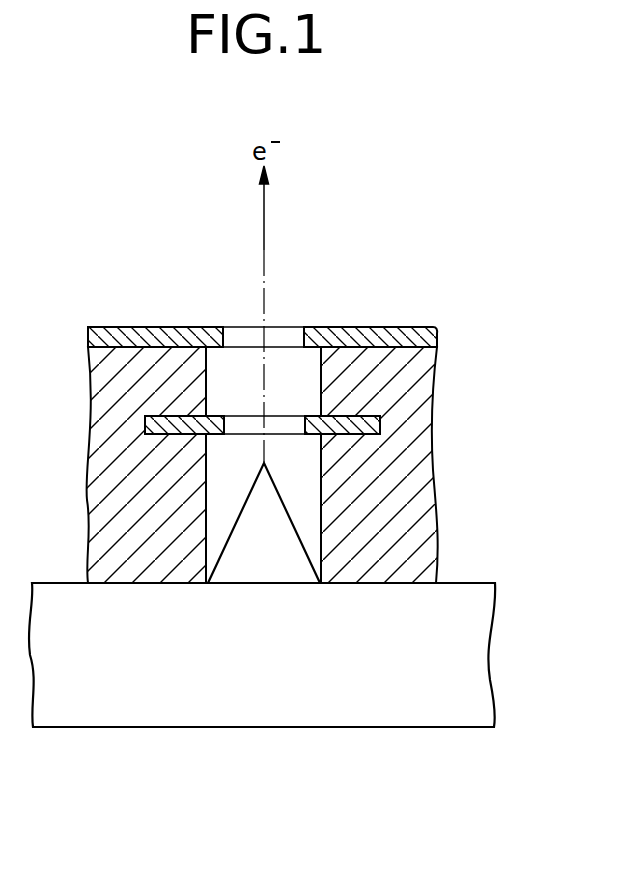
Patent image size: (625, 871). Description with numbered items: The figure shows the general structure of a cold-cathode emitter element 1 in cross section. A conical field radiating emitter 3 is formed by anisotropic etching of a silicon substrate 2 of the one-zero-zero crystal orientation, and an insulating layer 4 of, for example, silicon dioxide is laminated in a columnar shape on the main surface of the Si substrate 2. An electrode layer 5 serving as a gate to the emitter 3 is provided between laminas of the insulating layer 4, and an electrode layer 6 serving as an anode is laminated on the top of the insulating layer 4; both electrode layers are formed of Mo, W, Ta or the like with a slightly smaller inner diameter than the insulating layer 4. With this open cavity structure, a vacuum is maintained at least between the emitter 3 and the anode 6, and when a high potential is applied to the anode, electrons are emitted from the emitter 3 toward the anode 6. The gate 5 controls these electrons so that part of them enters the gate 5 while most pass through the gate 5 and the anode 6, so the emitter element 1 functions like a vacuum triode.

The cold-cathode emitter element 1 is at (492, 160).
The Si (100) substrate 2 is at (495, 613).
The conical field radiating emitter 3 is at (276, 557).
The insulating layer 4 is at (437, 462).
The electrode layer (gate) 5 is at (380, 415).
The electrode layer (anode) 6 is at (437, 337).